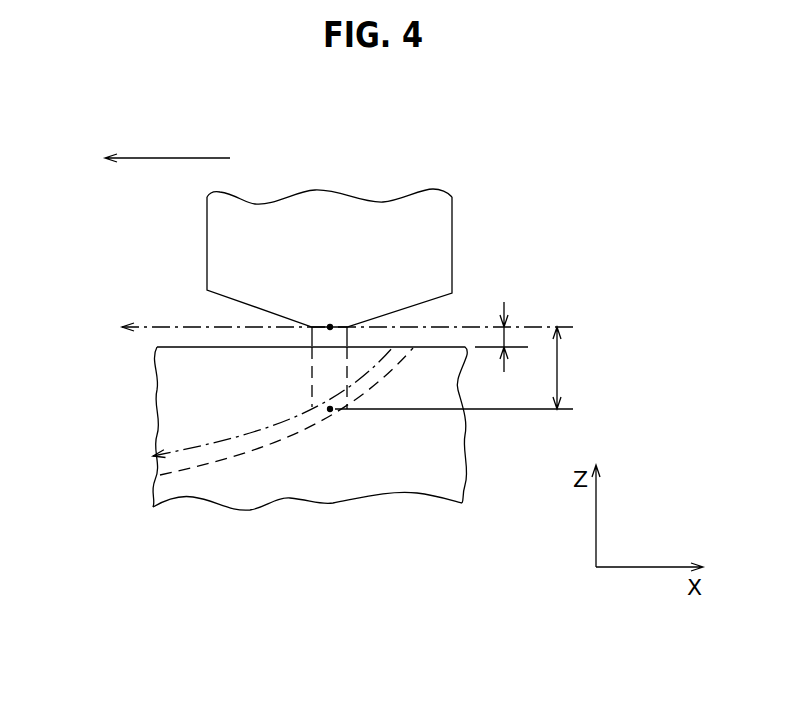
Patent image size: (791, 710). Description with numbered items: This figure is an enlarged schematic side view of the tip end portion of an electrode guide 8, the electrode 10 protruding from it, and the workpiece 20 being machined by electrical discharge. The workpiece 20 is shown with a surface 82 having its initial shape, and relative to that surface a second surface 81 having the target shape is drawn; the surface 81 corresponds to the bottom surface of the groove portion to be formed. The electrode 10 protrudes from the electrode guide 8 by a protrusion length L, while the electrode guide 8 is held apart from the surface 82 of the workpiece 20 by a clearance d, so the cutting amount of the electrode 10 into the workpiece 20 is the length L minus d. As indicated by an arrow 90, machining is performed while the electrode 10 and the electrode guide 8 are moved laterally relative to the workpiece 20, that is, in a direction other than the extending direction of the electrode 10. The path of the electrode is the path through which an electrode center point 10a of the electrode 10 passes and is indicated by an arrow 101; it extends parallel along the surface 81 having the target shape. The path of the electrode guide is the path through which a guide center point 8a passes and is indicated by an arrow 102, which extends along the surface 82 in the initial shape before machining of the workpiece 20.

The electrode guide 8 is at (225, 226).
The guide center point 8a is at (330, 325).
The electrode 10 is at (337, 335).
The electrode center point 10a is at (330, 407).
The workpiece 20 is at (415, 470).
The surface having the target shape 81 is at (228, 460).
The surface of the workpiece having the initial shape 82 is at (172, 343).
The arrow 90 is at (178, 157).
The arrow indicating the path of the electrode 101 is at (200, 447).
The arrow indicating the path of the electrode guide 102 is at (185, 327).
The clearance d is at (505, 337).
The protrusion length L is at (566, 368).